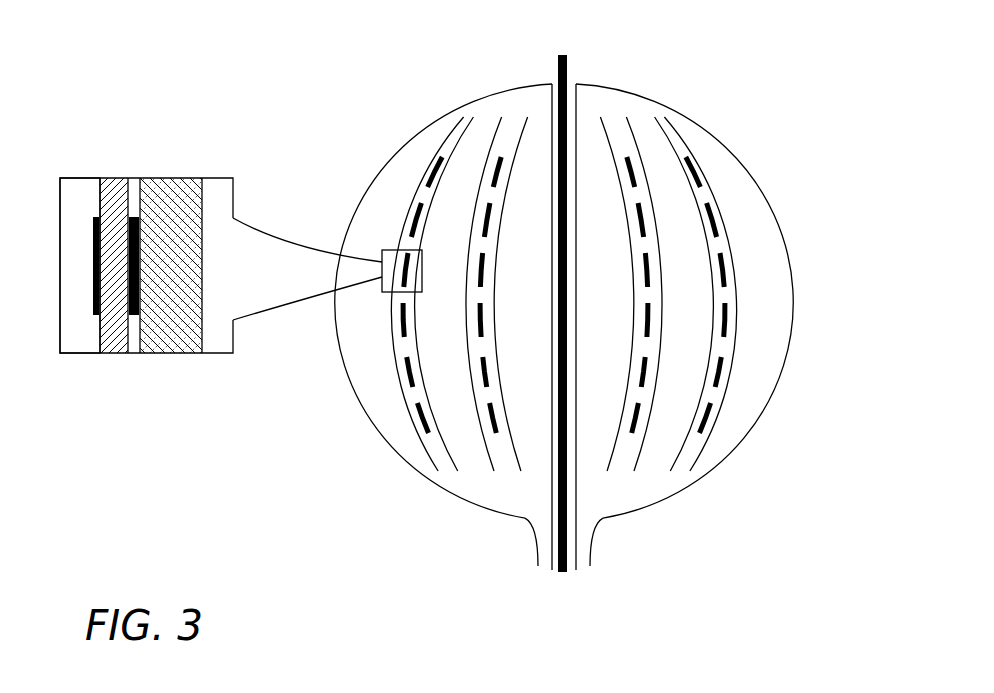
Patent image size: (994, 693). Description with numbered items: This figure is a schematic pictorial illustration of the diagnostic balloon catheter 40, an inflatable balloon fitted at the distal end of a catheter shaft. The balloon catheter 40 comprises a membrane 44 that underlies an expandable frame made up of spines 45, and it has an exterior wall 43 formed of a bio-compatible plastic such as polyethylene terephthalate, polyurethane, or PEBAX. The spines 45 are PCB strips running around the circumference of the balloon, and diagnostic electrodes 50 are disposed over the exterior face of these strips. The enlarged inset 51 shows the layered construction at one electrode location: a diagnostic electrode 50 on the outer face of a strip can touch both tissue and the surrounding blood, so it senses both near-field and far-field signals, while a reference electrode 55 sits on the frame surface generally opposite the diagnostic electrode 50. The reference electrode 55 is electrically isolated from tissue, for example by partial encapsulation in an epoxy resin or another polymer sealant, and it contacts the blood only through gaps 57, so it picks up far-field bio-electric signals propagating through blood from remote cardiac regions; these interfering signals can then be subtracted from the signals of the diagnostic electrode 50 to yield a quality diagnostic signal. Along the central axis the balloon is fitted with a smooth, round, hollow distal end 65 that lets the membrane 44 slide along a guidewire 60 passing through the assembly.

The diagnostic balloon catheter 40 is at (370, 90).
The exterior wall 43 is at (187, 230).
The membrane 44 is at (772, 262).
The spines 45 is at (435, 445).
The diagnostic electrodes 50 is at (700, 165).
The inset 51 is at (93, 350).
The reference electrode 55 is at (138, 260).
The gaps 57 is at (132, 178).
The guidewire 60 is at (567, 58).
The distal end 65 is at (550, 500).